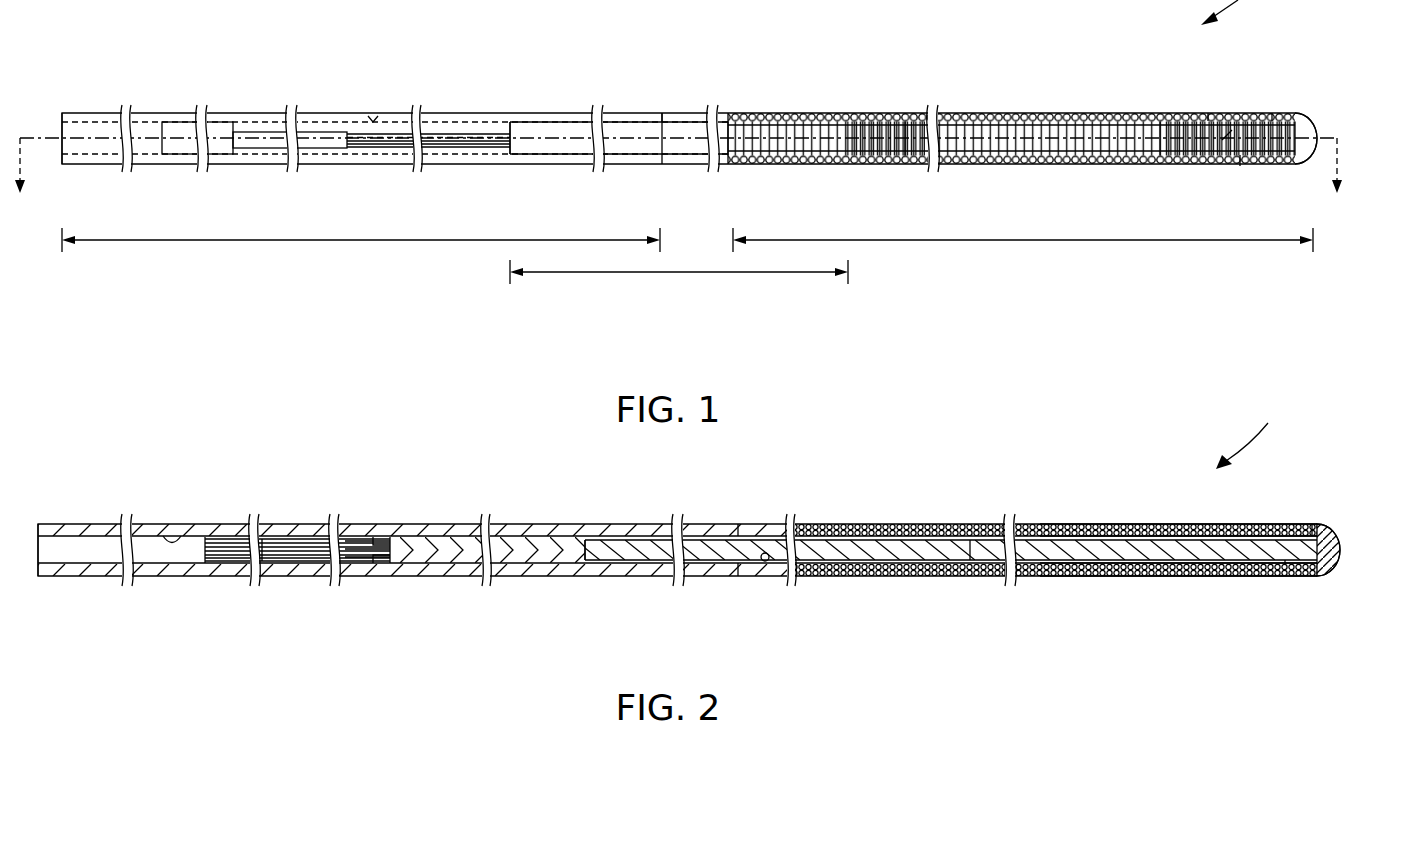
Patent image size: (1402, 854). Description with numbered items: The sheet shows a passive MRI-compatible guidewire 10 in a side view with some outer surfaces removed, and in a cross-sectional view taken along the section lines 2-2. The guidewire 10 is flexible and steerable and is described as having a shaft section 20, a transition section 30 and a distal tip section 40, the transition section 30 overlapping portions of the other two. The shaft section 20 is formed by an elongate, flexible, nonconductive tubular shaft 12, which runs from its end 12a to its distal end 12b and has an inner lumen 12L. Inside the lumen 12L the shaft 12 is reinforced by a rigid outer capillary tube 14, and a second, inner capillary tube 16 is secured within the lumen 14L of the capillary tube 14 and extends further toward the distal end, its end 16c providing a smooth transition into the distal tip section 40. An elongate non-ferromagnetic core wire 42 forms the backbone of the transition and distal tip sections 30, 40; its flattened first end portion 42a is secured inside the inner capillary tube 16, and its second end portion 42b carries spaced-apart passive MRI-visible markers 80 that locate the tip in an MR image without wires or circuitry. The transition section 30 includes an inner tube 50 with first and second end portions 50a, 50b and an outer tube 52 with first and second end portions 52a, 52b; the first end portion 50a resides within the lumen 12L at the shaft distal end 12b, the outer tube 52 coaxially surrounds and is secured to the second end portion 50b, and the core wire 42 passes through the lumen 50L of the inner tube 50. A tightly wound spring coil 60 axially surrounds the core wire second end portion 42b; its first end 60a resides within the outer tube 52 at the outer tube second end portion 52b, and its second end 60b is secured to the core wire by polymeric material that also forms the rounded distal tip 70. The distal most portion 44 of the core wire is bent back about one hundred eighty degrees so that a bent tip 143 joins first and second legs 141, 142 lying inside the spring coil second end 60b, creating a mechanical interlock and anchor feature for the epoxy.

In FIG. 1, the guidewire 10 is at (1236, 1).
In FIG. 2, the guidewire 10 is at (1267, 424).
In FIG. 1, the tubular shaft 12 is at (347, 112).
In FIG. 2, the tubular shaft 12 is at (283, 528).
In FIG. 1, the proximal end of outer tubular member 12a is at (103, 112).
In FIG. 2, the proximal end of outer tubular member 12a is at (53, 523).
In FIG. 1, the tubular shaft distal end 12b is at (645, 112).
In FIG. 2, the tubular shaft distal end 12b is at (710, 528).
In FIG. 1, the inner lumen 12L is at (373, 120).
In FIG. 2, the inner lumen 12L is at (173, 540).
In FIG. 1, the capillary tube 14 is at (195, 121).
In FIG. 2, the capillary tube 14 is at (218, 540).
In FIG. 2, the lumen of capillary tube 14L is at (270, 540).
In FIG. 1, the inner capillary tube 16 is at (323, 146).
In FIG. 2, the inner capillary tube 16 is at (226, 542).
In FIG. 2, the distal end of coil member 16c is at (375, 536).
In FIG. 1, the shaft section 20 is at (340, 243).
In FIG. 1, the transition section 30 is at (668, 275).
In FIG. 1, the distal tip section 40 is at (1000, 243).
In FIG. 1, the core wire 42 is at (975, 112).
In FIG. 2, the core wire 42 is at (1080, 546).
In FIG. 1, the first end portion of core wire 42a is at (403, 134).
In FIG. 2, the first end portion of core wire 42a is at (292, 547).
In FIG. 1, the second end portion of core wire 42b is at (1297, 144).
In FIG. 2, the second end portion of core wire 42b is at (1285, 562).
In FIG. 1, the distal most portion 44 is at (1158, 112).
In FIG. 1, the inner tube 50 is at (623, 121).
In FIG. 2, the inner tube 50 is at (689, 562).
In FIG. 1, the inner tube first end portion 50a is at (530, 121).
In FIG. 2, the inner tube first end portion 50a is at (630, 537).
In FIG. 1, the inner tube second end portion 50b is at (905, 114).
In FIG. 2, the inner tube second end portion 50b is at (970, 528).
In FIG. 2, the lumen of inner tube 50L is at (766, 561).
In FIG. 1, the outer tube 52 is at (738, 112).
In FIG. 2, the outer tube 52 is at (740, 576).
In FIG. 1, the outer tube first end portion 52a is at (688, 112).
In FIG. 2, the outer tube first end portion 52a is at (748, 528).
In FIG. 1, the outer tube second end portion 52b is at (847, 116).
In FIG. 2, the outer tube second end portion 52b is at (919, 577).
In FIG. 1, the spring coil 60 is at (1113, 112).
In FIG. 2, the spring coil 60 is at (1112, 527).
In FIG. 1, the spring coil first end 60a is at (745, 116).
In FIG. 2, the spring coil first end 60a is at (815, 527).
In FIG. 1, the spring coil second end 60b is at (1272, 112).
In FIG. 2, the spring coil second end 60b is at (1312, 527).
In FIG. 1, the rounded distal tip 70 is at (1303, 128).
In FIG. 2, the rounded distal tip 70 is at (1340, 545).
In FIG. 1, the passive MRI-visible markers 80 is at (1025, 114).
In FIG. 2, the passive MRI-visible markers 80 is at (1048, 525).
In FIG. 1, the first leg 141 is at (1222, 140).
In FIG. 1, the second leg 142 is at (1208, 113).
In FIG. 1, the bent tip 143 is at (1297, 130).
In FIG. 1, the section lines 2- 2 is at (679, 183).